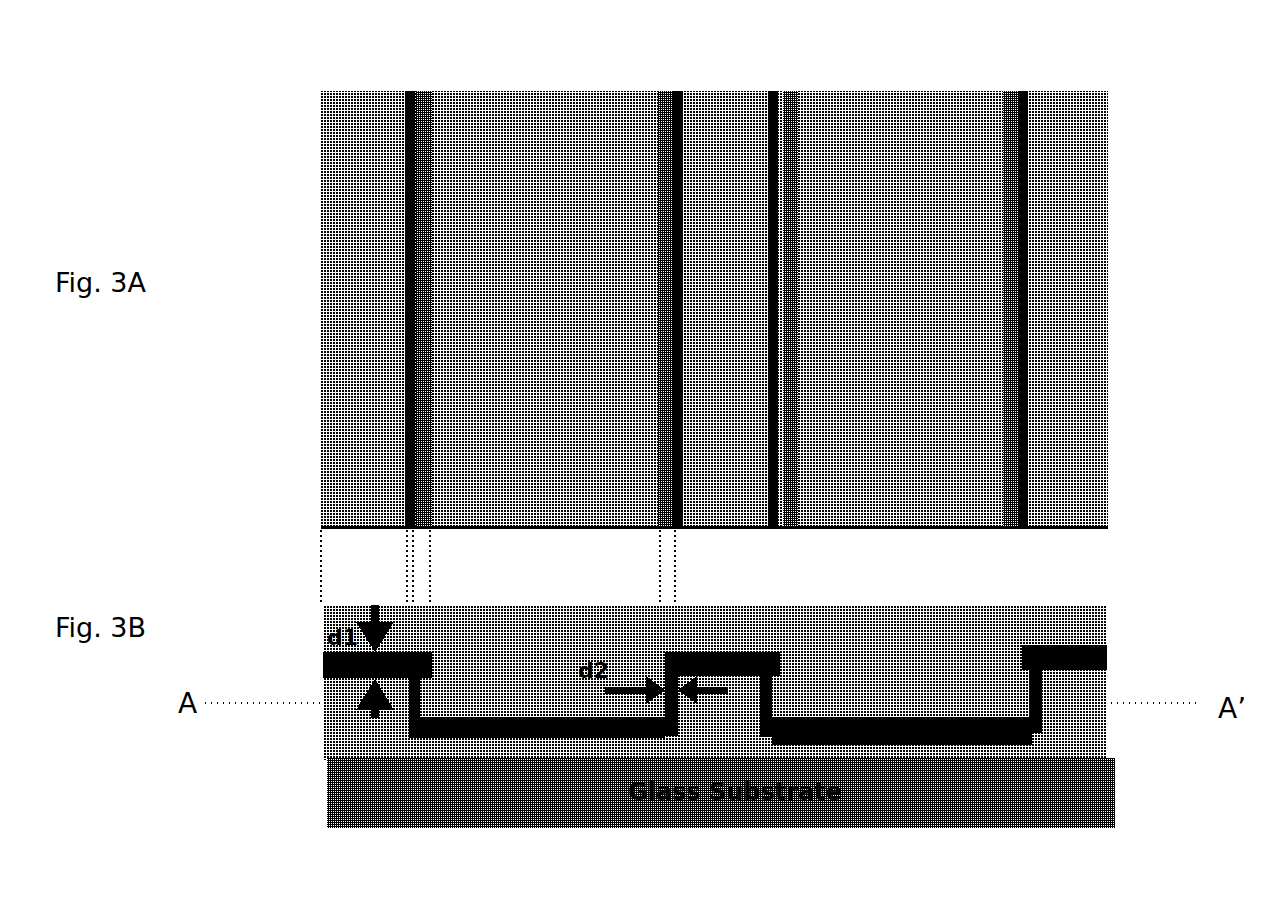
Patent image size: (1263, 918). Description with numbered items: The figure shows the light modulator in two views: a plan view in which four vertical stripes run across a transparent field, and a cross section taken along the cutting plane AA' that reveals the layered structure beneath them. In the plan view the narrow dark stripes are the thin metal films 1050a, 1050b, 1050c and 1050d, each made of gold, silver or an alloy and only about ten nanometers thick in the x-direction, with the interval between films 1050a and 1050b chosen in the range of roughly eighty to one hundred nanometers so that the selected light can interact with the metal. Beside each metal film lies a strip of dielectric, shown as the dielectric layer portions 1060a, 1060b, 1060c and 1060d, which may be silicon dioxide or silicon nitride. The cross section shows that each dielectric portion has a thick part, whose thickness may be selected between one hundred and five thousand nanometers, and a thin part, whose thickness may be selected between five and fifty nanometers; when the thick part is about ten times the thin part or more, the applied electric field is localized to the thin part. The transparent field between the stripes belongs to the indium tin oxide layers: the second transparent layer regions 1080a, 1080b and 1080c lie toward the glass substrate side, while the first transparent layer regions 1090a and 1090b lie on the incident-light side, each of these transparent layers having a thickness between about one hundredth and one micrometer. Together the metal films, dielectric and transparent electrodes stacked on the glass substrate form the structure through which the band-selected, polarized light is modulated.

In FIG. 3A, the thin metal film 1050a is at (407, 92).
In FIG. 3B, the thin metal film 1050a is at (405, 731).
In FIG. 3A, the thin metal film 1050b is at (682, 92).
In FIG. 3A, the thin metal film 1050c is at (773, 92).
In FIG. 3A, the thin metal film 1050d is at (1030, 195).
In FIG. 3B, the thin metal film 1050d is at (1042, 720).
In FIG. 3A, the dielectric layer 1060a is at (433, 125).
In FIG. 3B, the dielectric layer 1060a is at (435, 695).
In FIG. 3A, the dielectric layer 1060b is at (658, 136).
In FIG. 3A, the dielectric layer 1060c is at (795, 185).
In FIG. 3A, the dielectric layer 1060d is at (1010, 92).
In FIG. 3A, the second transparent layer 1080a is at (360, 408).
In FIG. 3A, the second transparent layer 1080b is at (732, 455).
In FIG. 3B, the second transparent layer 1080b is at (728, 628).
In FIG. 3B, the second transparent layer 1080c is at (1060, 690).
In FIG. 3A, the first transparent layer 1090a is at (492, 445).
In FIG. 3B, the first transparent layer 1090a is at (485, 625).
In FIG. 3A, the first transparent layer 1090b is at (882, 445).
In FIG. 3B, the first transparent layer 1090b is at (907, 628).